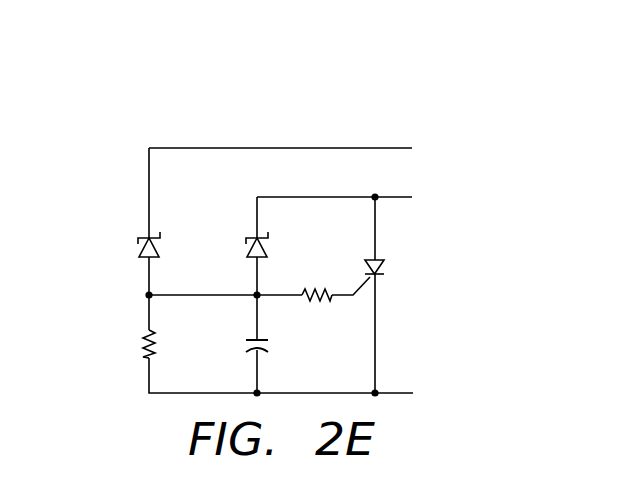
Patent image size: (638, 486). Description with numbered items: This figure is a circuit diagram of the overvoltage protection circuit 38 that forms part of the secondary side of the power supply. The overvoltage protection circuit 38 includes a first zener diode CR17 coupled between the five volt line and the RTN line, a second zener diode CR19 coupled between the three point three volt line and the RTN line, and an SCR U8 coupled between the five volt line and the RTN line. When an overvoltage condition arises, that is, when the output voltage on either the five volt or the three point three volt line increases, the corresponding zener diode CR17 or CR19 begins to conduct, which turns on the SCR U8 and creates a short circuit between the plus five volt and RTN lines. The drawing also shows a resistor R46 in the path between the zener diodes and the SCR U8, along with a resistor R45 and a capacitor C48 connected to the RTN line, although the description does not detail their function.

The overvoltage protection circuit 38 is at (228, 78).
The second zener diode CR19 is at (126, 234).
The first zener diode CR17 is at (233, 234).
The resistor R46 is at (314, 283).
The SCR U8 is at (391, 270).
The resistor R45 is at (128, 345).
The capacitor C48 is at (235, 347).